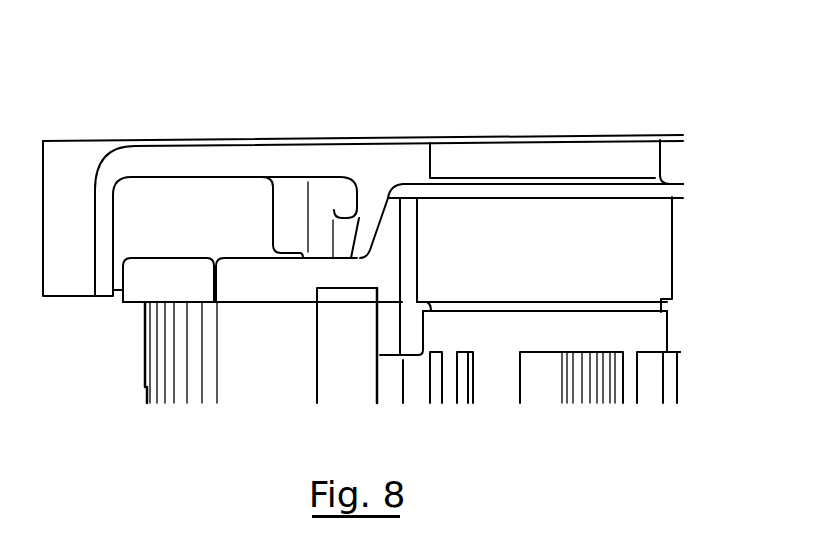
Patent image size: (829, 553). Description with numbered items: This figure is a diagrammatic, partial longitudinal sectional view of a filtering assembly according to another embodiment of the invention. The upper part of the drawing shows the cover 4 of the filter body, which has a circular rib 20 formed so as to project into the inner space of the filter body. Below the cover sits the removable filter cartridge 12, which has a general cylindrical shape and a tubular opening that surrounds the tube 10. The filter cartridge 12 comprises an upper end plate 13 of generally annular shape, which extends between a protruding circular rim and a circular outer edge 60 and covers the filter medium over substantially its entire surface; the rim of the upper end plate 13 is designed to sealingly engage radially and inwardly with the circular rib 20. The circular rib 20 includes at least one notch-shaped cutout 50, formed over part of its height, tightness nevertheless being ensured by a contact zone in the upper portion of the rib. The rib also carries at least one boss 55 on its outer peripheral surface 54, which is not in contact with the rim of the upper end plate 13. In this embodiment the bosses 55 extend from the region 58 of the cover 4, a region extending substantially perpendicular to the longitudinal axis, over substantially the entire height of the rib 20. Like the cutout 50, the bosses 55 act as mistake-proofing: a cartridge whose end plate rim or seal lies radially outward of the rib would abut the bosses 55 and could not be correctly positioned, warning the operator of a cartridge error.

The cover 4 is at (538, 155).
The tube 10 is at (413, 248).
The filter cartridge 12 is at (168, 360).
The upper end plate 13 is at (233, 275).
The circular rib 20 is at (370, 197).
The notch-shaped cutout 50 is at (365, 235).
The outer peripheral surface 54 is at (328, 178).
The boss 55 is at (292, 217).
The region of the cover 58 is at (220, 178).
The circular outer edge 60 is at (153, 270).